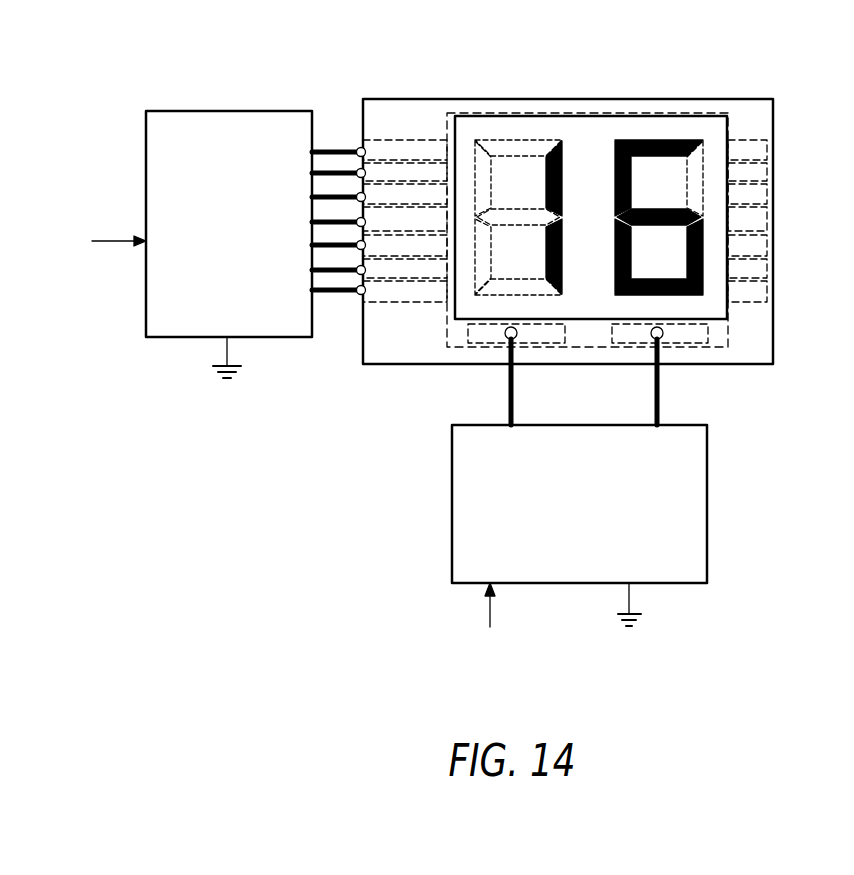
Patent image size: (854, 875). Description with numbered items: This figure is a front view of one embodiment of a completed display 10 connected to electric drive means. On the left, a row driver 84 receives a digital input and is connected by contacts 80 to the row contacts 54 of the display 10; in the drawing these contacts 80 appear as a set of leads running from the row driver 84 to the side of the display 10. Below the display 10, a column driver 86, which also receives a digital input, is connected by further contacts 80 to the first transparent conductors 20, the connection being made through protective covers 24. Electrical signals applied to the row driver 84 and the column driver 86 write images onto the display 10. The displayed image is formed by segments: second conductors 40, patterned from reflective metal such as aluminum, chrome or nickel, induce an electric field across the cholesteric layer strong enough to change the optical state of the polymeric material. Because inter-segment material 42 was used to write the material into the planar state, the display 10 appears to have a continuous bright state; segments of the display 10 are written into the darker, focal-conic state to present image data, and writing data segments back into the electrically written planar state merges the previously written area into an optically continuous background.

The display 10 is at (722, 66).
The first transparent conductors 20 is at (722, 332).
The protective covers 24 is at (487, 334).
The second conductors 40 is at (517, 148).
The inter-segment material 42 is at (587, 132).
The row contacts 54 is at (403, 147).
The contacts 80 is at (338, 133).
The row driver 84 is at (217, 111).
The column driver 86 is at (452, 490).